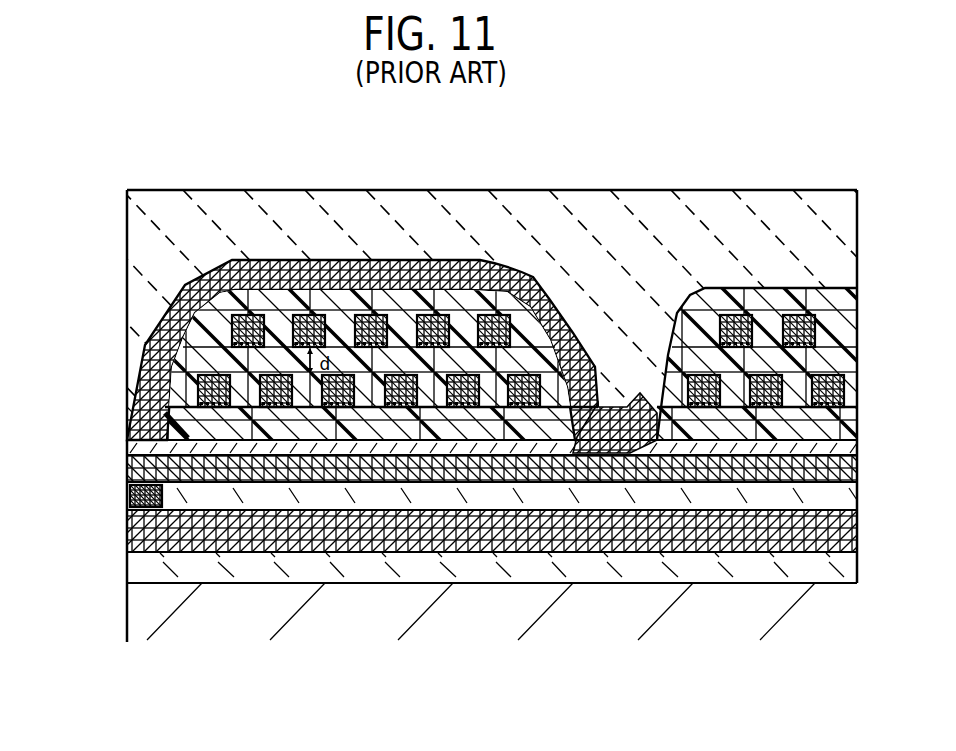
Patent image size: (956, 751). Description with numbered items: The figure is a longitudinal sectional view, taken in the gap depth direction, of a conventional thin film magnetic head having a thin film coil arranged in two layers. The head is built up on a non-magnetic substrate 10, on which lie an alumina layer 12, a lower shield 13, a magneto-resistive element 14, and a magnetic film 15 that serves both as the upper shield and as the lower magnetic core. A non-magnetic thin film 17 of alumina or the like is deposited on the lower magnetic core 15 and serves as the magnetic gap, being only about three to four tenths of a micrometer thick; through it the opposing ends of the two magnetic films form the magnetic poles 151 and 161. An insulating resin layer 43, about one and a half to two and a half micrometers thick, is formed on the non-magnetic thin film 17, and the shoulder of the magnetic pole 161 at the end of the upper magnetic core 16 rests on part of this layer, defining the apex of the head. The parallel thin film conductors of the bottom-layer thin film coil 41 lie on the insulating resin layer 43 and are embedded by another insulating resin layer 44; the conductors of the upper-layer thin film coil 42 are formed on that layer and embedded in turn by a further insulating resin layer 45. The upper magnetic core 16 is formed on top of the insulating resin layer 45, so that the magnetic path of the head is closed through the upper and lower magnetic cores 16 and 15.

The non-magnetic substrate 10 is at (373, 612).
The alumina layer 12 is at (458, 568).
The lower shield 13 is at (540, 530).
The magneto-resistive element 14 is at (130, 497).
The magnetic film 15 is at (313, 470).
The magnetic pole 151 is at (143, 470).
The upper magnetic core 16 is at (240, 262).
The magnetic pole 161 is at (132, 421).
The non-magnetic thin film 17 is at (198, 457).
The bottom-layer thin film coil 41 is at (528, 378).
The upper-layer thin film coil 42 is at (364, 322).
The insulating resin layer 43 is at (253, 425).
The insulating resin layer 44 is at (466, 365).
The insulating resin layer 45 is at (297, 302).